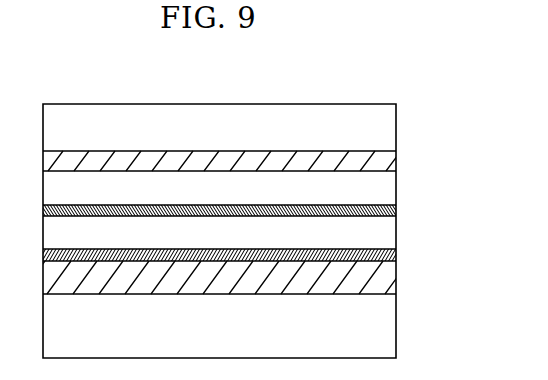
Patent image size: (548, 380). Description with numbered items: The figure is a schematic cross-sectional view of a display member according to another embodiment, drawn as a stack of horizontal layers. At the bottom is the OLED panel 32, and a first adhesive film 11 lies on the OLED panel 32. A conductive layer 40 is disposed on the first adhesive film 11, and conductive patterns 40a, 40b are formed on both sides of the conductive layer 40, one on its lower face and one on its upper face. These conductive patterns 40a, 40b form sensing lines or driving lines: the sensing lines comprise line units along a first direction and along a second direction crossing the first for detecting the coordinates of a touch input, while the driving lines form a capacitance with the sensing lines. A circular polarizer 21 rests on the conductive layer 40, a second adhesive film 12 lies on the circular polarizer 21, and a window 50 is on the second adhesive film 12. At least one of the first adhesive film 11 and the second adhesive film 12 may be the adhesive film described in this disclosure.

The window 50 is at (385, 127).
The second adhesive film 12 is at (385, 156).
The circular polarizer 21 is at (385, 188).
The conductive pattern 40b is at (385, 209).
The conductive layer 40 is at (385, 233).
The conductive pattern 40a is at (385, 253).
The first adhesive film 11 is at (385, 276).
The OLED panel 32 is at (385, 319).